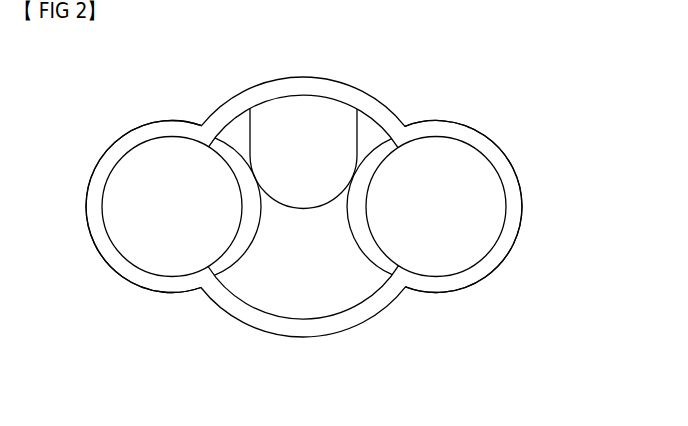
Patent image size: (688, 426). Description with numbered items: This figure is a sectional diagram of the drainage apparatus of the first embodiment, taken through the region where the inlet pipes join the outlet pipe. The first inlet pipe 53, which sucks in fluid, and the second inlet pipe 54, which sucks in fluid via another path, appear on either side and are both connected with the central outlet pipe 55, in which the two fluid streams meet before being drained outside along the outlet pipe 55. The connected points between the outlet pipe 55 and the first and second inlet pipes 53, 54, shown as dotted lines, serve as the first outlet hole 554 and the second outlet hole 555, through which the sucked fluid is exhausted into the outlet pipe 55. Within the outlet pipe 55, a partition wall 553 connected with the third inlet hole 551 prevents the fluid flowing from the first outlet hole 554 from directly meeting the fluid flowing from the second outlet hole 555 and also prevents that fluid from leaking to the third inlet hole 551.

The first inlet pipe 53 is at (135, 158).
The second inlet pipe 54 is at (473, 157).
The outlet pipe 55 is at (302, 296).
The third inlet hole 551 is at (305, 103).
The partition wall 553 is at (317, 209).
The first outlet hole 554 is at (240, 262).
The second outlet hole 555 is at (366, 262).